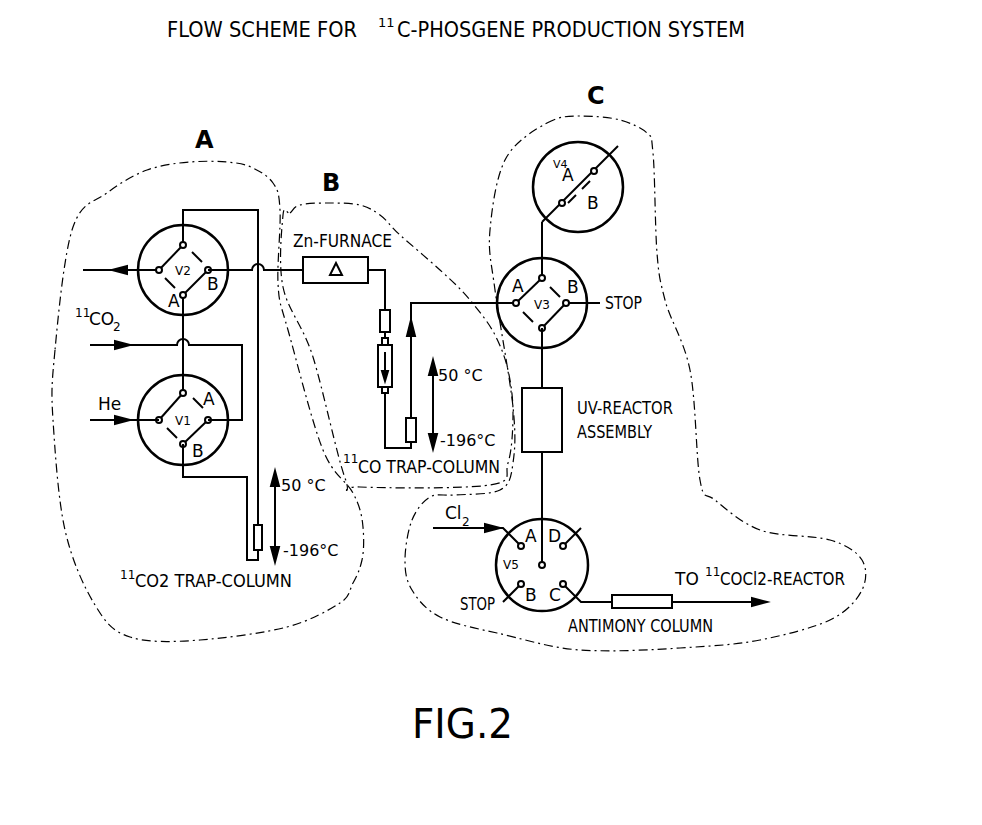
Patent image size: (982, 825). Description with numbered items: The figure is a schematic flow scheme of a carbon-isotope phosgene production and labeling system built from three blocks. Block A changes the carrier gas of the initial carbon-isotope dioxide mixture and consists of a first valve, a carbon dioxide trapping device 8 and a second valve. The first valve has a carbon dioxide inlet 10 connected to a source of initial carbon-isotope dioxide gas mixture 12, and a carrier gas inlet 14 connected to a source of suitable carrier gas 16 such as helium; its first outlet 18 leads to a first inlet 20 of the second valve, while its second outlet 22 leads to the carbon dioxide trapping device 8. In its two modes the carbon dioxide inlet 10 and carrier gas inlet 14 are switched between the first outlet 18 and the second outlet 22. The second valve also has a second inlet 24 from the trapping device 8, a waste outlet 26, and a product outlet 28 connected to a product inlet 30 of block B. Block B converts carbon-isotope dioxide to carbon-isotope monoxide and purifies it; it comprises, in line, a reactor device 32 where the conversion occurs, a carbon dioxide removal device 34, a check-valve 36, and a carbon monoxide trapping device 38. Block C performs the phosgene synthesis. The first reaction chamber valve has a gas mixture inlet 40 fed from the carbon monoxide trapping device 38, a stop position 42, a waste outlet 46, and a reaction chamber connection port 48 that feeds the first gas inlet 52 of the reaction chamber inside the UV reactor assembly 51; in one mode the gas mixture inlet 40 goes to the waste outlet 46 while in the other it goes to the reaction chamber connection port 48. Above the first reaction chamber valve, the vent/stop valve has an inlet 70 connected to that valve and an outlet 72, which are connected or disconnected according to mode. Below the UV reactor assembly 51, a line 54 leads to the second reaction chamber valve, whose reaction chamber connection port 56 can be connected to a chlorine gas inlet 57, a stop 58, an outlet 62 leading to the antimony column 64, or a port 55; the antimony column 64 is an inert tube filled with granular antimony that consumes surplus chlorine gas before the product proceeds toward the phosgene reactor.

The carbon dioxide trapping device 8 is at (222, 502).
The carbon dioxide inlet 10 is at (214, 431).
The source of initial carbon-isotope dioxide gas mixture 12 is at (151, 377).
The carrier gas inlet 14 is at (154, 431).
The source of suitable carrier gas 16 is at (110, 420).
The first outlet 18 is at (168, 396).
The first inlet 20 is at (193, 301).
The second outlet 22 is at (172, 451).
The second inlet 24 is at (168, 249).
The waste outlet 26 is at (157, 281).
The product outlet 28 is at (213, 256).
The product inlet 30 is at (255, 279).
The reactor device 32 is at (344, 284).
The carbon dioxide removal device 34 is at (372, 324).
The check-valve 36 is at (383, 393).
The carbon monoxide trapping device 38 is at (450, 372).
The gas mixture inlet 40 is at (516, 318).
The stop position 42 is at (573, 315).
The waste outlet 46 is at (552, 280).
The reaction chamber connection port 48 is at (552, 333).
The UV reactor assembly 51 is at (542, 420).
The first gas inlet 52 is at (554, 358).
The outlet line from UV reactor 54 is at (554, 508).
The port 55 is at (583, 539).
The reaction chamber connection port 56 is at (559, 565).
The Cl2 gas inlet 57 is at (478, 539).
The stop 58 is at (511, 604).
The outlet 62 is at (586, 592).
The antimony column 64 is at (689, 591).
The inlet 70 is at (571, 216).
The outlet 72 is at (606, 182).